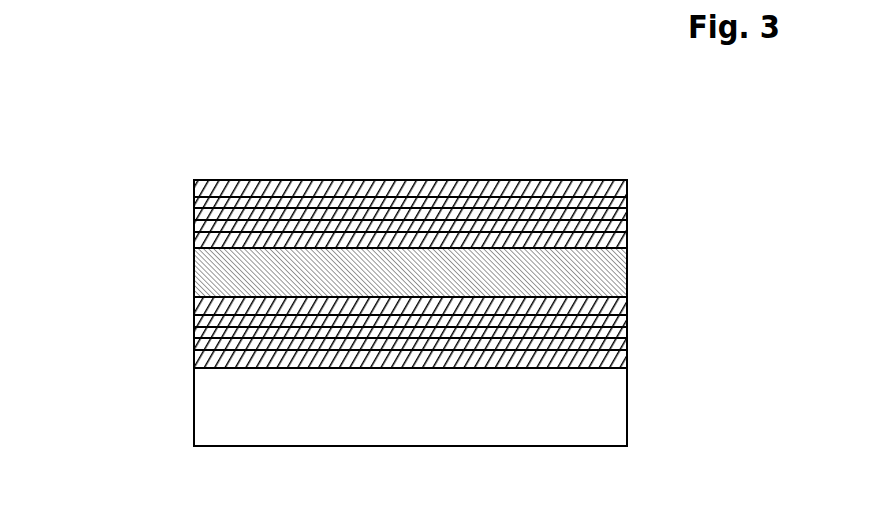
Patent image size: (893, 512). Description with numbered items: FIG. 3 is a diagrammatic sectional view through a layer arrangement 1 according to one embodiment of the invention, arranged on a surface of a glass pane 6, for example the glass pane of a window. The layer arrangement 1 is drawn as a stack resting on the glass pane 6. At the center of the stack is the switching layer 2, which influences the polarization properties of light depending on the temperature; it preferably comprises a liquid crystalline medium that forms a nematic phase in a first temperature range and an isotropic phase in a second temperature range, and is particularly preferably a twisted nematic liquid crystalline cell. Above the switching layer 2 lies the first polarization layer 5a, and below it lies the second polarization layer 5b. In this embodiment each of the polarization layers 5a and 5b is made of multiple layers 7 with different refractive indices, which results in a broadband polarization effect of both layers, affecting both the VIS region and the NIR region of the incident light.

The layer arrangement 1 is at (295, 163).
The first polarization layer 5a is at (192, 250).
The second polarization layer 5b is at (192, 365).
The switching layer 2 is at (627, 277).
The multiple layers 7 is at (627, 232).
The glass pane 6 is at (627, 400).